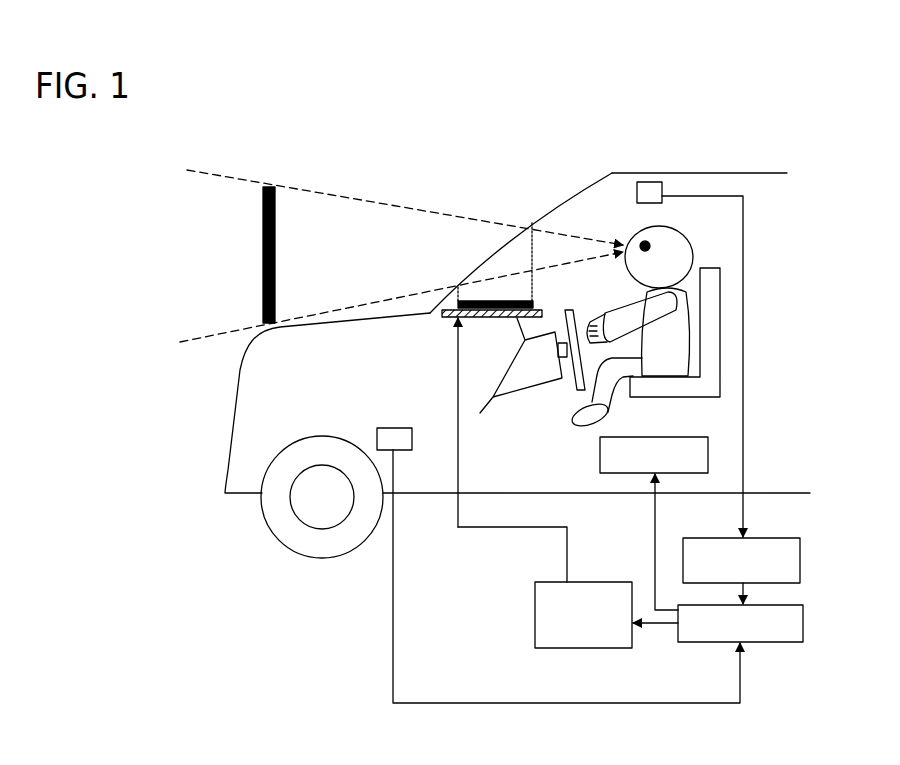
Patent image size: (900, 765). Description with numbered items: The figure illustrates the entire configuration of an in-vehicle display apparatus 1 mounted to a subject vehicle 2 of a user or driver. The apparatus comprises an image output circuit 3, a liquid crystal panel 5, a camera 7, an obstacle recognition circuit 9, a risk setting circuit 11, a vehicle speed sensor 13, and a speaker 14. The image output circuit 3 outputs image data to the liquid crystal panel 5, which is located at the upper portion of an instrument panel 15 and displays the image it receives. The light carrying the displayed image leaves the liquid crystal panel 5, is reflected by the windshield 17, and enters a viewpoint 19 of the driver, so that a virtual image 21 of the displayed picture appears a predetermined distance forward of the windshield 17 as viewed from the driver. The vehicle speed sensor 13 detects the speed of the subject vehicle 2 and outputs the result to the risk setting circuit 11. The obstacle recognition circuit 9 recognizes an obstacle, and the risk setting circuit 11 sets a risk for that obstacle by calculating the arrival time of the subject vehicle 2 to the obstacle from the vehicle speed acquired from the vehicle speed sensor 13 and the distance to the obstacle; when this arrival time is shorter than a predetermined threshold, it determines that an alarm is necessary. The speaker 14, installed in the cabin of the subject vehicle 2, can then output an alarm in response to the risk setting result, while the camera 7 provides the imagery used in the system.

The in-vehicle display apparatus 1 is at (830, 432).
The subject vehicle 2 is at (763, 174).
The image output circuit 3 is at (535, 628).
The liquid crystal panel 5 is at (448, 318).
The camera 7 is at (649, 182).
The obstacle recognition circuit 9 is at (777, 537).
The risk setting circuit 11 is at (775, 642).
The vehicle speed sensor 13 is at (400, 428).
The speaker 14 is at (670, 433).
The instrument panel 15 is at (490, 320).
The windshield 17 is at (537, 219).
The viewpoint 19 is at (659, 238).
The virtual image 21 is at (265, 233).